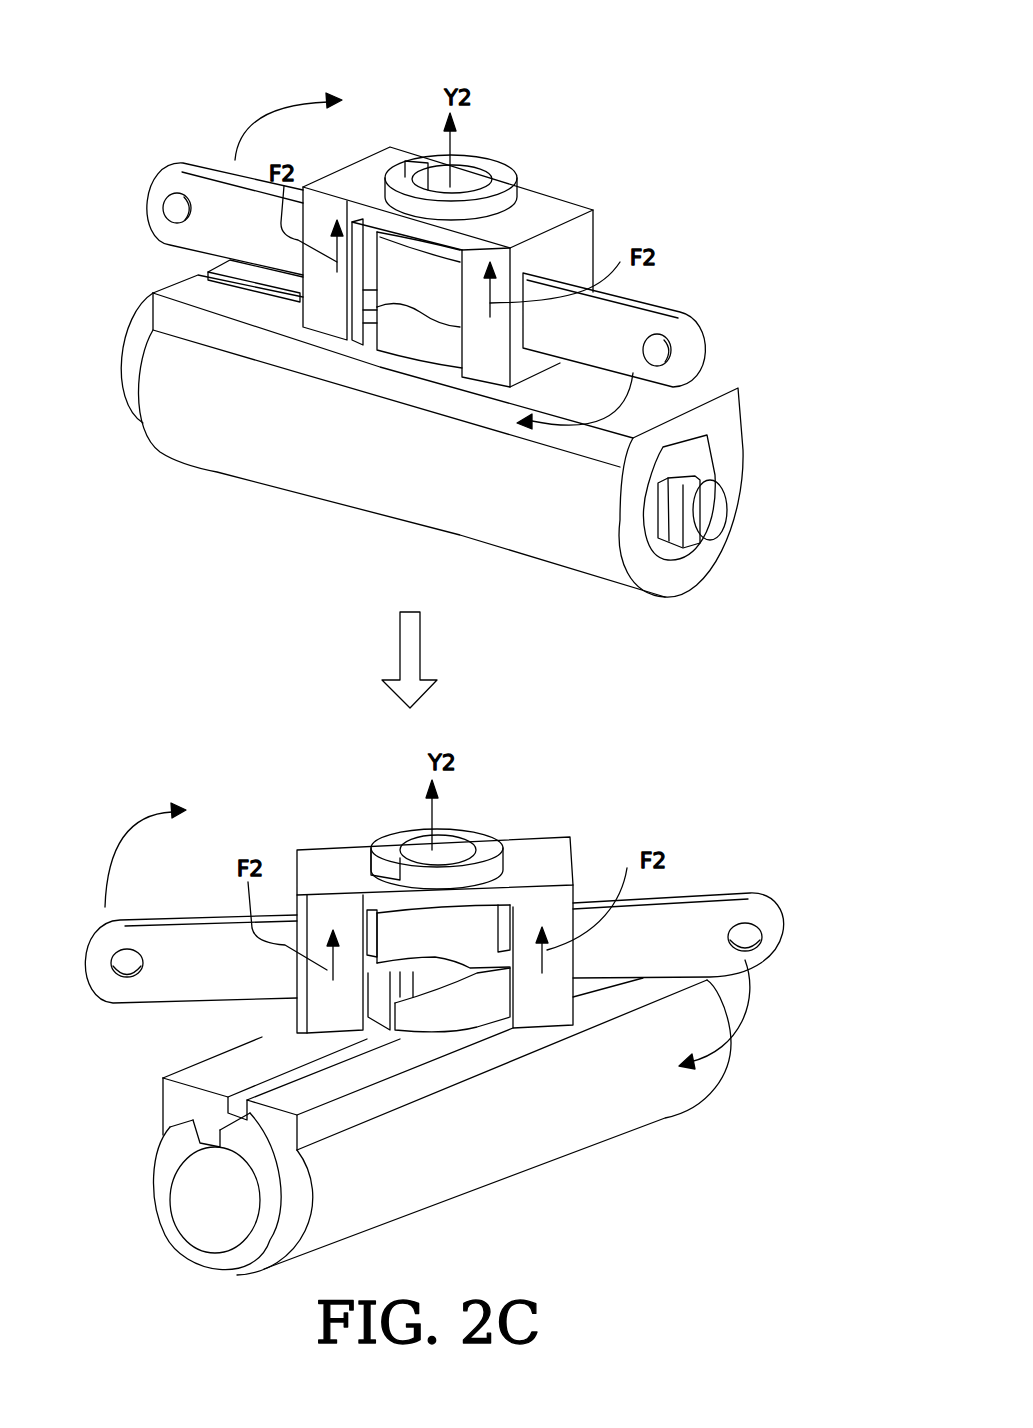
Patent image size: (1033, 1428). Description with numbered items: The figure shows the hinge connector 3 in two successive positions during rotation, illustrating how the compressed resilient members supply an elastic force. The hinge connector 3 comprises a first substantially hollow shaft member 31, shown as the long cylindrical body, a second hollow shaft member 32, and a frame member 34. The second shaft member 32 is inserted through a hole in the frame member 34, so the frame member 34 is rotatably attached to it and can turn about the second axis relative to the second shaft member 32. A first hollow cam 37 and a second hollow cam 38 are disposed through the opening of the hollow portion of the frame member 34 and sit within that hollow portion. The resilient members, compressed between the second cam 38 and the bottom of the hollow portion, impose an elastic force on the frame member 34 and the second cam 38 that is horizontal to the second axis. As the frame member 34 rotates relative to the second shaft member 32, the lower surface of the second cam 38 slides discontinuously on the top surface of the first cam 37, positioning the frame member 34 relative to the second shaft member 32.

The hinge connector 3 is at (557, 105).
The first substantially hollow shaft member 31 is at (707, 420).
The second hollow shaft member 32 is at (500, 177).
The frame member 34 is at (557, 217).
The first hollow cam 37 is at (393, 333).
The second hollow cam 38 is at (393, 277).